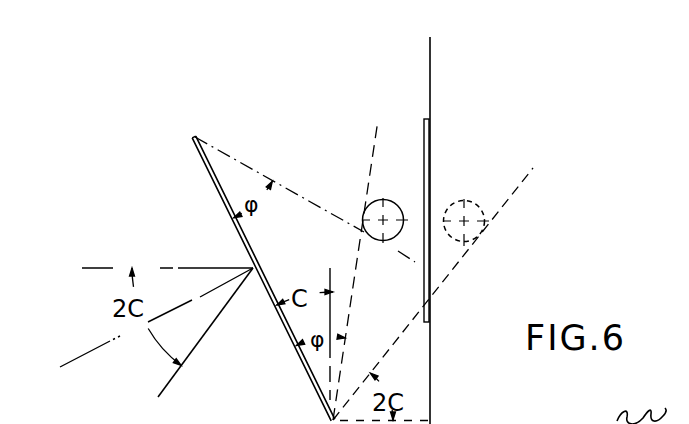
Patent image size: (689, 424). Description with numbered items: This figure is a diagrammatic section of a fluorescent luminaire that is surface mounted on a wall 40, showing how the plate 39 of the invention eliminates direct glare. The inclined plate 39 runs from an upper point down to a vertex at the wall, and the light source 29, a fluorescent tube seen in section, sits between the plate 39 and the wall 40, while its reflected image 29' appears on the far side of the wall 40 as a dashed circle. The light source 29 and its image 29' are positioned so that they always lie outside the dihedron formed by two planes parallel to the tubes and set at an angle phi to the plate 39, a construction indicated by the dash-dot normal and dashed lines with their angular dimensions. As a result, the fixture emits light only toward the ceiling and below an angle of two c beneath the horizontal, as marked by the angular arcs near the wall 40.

The plate 39 is at (219, 192).
The wall 40 is at (424, 166).
The light source 29 is at (386, 207).
The reflected image of light source 29' is at (475, 208).